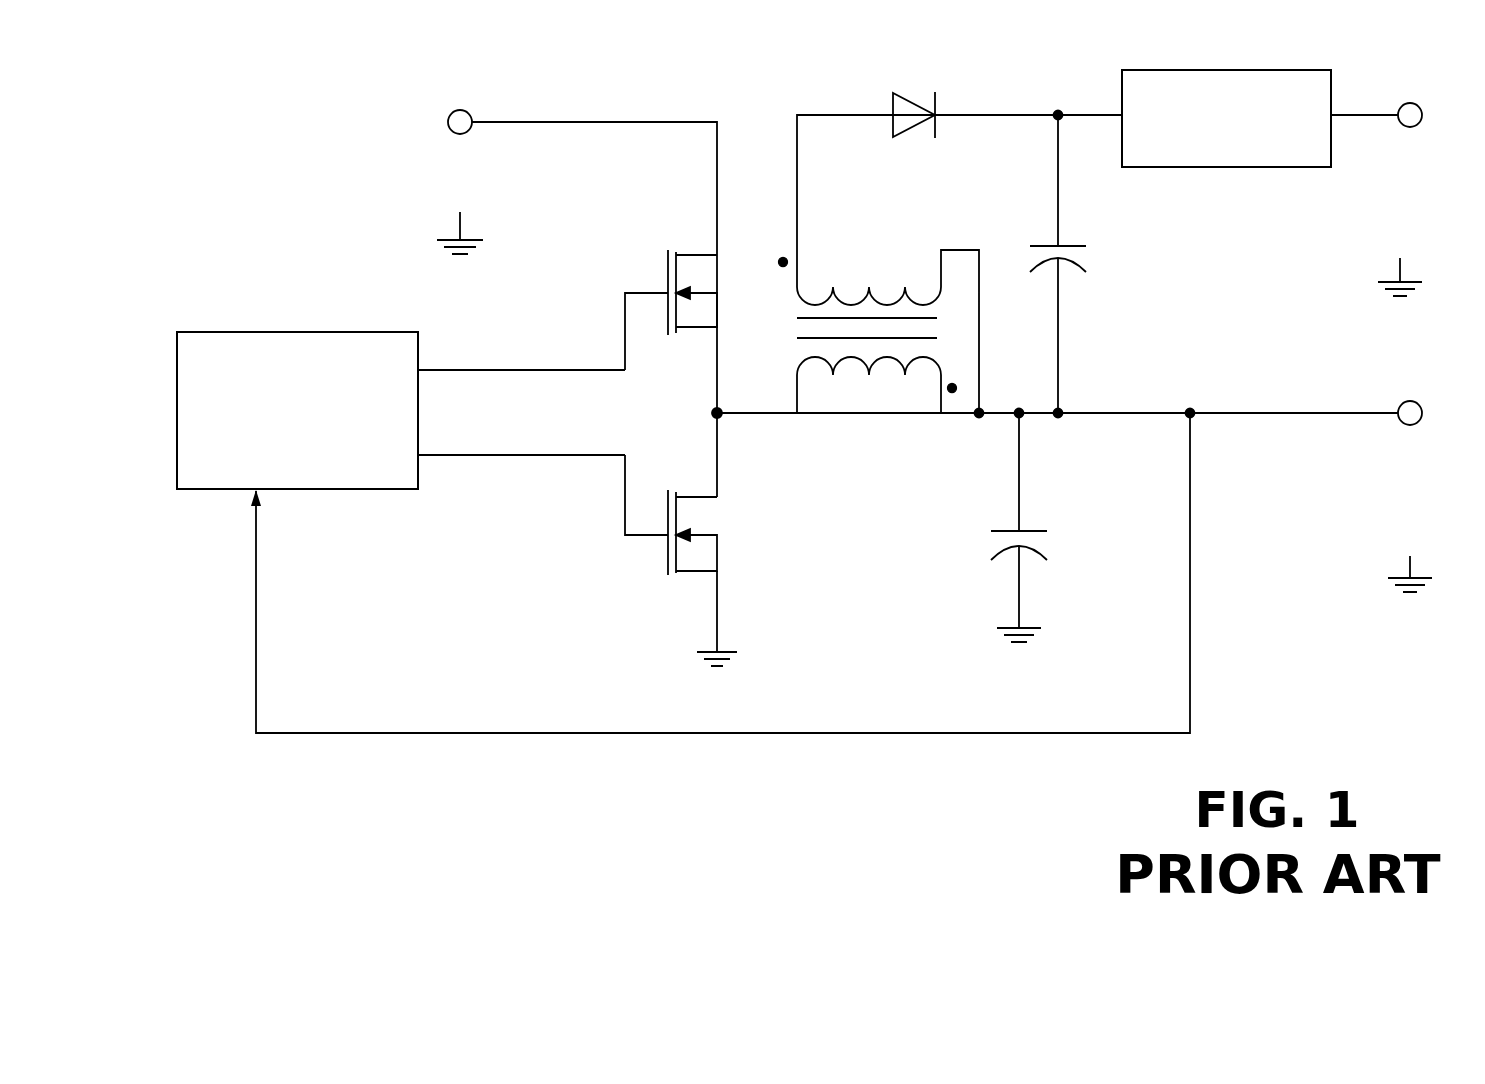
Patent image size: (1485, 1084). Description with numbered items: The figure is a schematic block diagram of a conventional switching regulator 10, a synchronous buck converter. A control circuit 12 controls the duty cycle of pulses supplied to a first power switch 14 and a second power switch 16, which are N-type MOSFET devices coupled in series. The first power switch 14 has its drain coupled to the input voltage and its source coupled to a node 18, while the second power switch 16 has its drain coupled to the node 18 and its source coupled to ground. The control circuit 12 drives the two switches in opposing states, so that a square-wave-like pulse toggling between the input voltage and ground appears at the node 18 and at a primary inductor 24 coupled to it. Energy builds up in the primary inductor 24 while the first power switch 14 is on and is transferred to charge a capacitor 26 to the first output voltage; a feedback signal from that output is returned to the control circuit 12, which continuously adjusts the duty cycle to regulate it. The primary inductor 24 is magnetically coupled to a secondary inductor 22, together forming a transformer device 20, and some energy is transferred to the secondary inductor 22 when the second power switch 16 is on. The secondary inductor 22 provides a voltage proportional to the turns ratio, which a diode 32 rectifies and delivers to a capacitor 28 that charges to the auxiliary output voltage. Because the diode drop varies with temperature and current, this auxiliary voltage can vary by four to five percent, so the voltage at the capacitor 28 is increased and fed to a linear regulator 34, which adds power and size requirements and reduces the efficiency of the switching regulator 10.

The switching regulator 10 is at (352, 100).
The control circuit 12 is at (272, 332).
The first power switch 14 is at (632, 240).
The second power switch 16 is at (648, 577).
The node 18 is at (745, 447).
The transformer device 20 is at (918, 228).
The secondary inductor 22 is at (850, 266).
The primary inductor 24 is at (855, 418).
The capacitor 26 is at (965, 520).
The capacitor 28 is at (1108, 240).
The diode 32 is at (935, 70).
The linear regulator 34 is at (1233, 70).